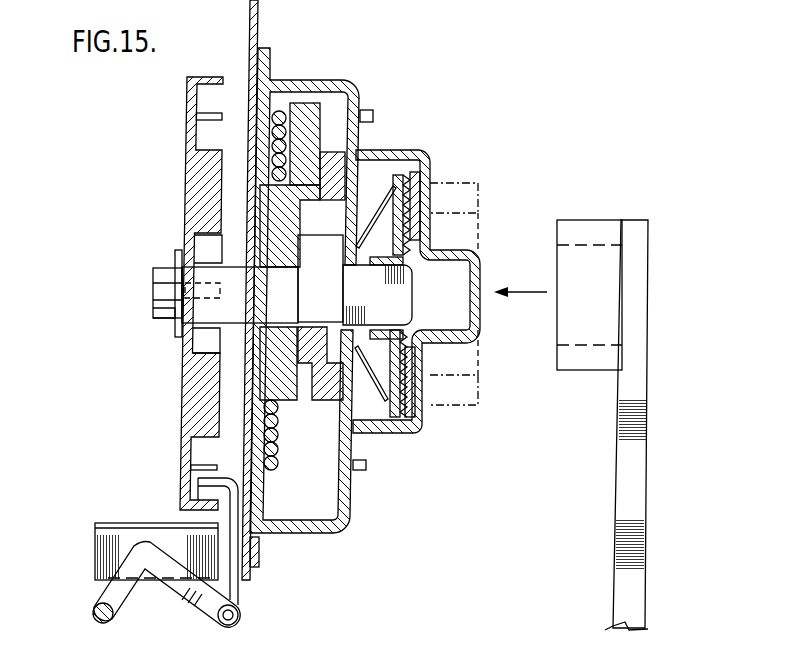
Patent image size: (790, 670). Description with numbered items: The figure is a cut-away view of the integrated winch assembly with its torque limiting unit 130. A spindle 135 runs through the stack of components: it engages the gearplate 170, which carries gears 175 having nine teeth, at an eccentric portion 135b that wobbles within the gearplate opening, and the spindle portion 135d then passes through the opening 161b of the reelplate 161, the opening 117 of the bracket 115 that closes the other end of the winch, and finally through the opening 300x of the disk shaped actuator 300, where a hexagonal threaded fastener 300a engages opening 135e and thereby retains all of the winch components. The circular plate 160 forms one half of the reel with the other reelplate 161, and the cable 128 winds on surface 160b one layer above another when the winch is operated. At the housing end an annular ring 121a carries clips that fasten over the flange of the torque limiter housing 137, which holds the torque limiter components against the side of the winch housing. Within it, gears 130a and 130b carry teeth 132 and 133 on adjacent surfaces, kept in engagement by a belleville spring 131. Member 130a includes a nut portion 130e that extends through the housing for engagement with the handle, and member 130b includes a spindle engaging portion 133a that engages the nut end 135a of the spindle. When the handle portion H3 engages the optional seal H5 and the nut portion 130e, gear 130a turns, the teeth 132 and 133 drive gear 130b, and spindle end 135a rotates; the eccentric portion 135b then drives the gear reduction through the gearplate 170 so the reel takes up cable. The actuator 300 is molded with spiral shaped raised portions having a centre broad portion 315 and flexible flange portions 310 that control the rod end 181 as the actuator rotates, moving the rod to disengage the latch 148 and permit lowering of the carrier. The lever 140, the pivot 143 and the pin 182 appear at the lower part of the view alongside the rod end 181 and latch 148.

The bracket 115 is at (250, 14).
The opening 117 is at (240, 328).
The annular ring 121a is at (376, 113).
The cable 128 is at (345, 319).
The torque limiting unit 130 is at (516, 260).
The gear 130a is at (416, 196).
The gear 130b is at (408, 185).
The nut portion 130e is at (478, 337).
The belleville spring 131 is at (371, 392).
The teeth 132 is at (410, 420).
The teeth 133 is at (407, 435).
The spindle engaging portion 133a is at (470, 303).
The spindle 135 is at (441, 289).
The nut end 135a is at (410, 292).
The eccentric portion 135b is at (318, 308).
The spindle portion 135d is at (283, 307).
The opening 135e is at (173, 314).
The torque limiter housing 137 is at (420, 428).
The lever 140 is at (177, 593).
The pivot pin 143 is at (93, 613).
The latch 148 is at (103, 542).
The circular plate 160 is at (308, 106).
The surface 160b is at (286, 200).
The reelplate 161 is at (275, 76).
The opening 161b is at (268, 240).
The gearplate 170 is at (360, 92).
The gears 175 is at (322, 185).
The rod end 181 is at (205, 482).
The pin 182 is at (240, 621).
The actuator 300 is at (154, 293).
The hexagonal threaded fastener 300a is at (153, 295).
The opening 300x is at (178, 262).
The flexible flange portions 310 is at (197, 122).
The centre broad portion 315 is at (193, 186).
The portion H3 is at (610, 232).
The seal H5 is at (478, 207).